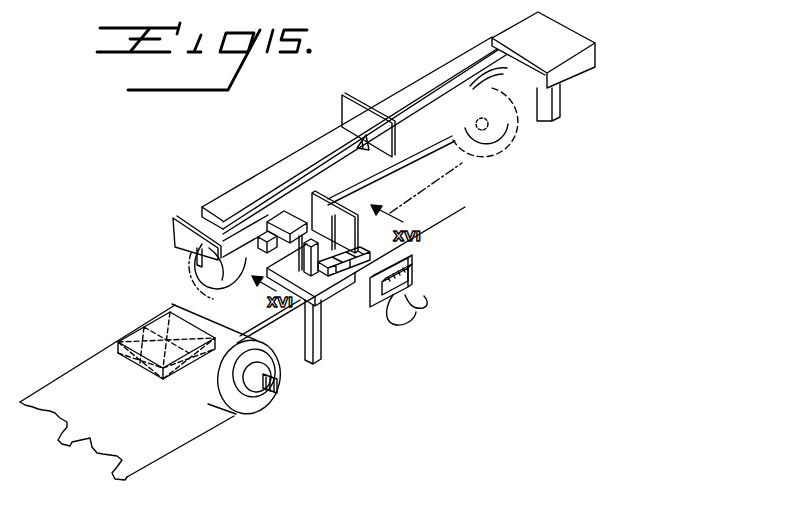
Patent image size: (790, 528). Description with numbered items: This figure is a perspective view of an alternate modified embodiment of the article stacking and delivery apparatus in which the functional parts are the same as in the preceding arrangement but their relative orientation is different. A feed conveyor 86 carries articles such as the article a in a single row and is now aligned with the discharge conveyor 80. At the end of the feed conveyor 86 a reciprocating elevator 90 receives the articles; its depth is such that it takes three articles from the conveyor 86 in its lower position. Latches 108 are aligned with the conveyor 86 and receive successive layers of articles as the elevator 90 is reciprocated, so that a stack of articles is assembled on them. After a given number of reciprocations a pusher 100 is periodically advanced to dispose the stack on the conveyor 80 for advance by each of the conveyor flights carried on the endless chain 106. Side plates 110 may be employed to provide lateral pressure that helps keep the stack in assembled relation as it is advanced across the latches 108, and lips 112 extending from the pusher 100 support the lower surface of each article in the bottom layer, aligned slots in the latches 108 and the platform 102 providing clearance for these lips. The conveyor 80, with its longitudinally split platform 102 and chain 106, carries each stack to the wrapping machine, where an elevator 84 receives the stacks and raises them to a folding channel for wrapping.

The conveyor 80 is at (297, 136).
The elevator 84 is at (597, 45).
The conveyor 86 is at (192, 443).
The elevator 90 is at (355, 285).
The pusher 100 is at (412, 263).
The platform 102 is at (252, 176).
The endless chain 106 is at (344, 94).
The latches 108 is at (262, 266).
The side plates 110 is at (361, 199).
The lips 112 is at (424, 306).
The article a is at (126, 339).